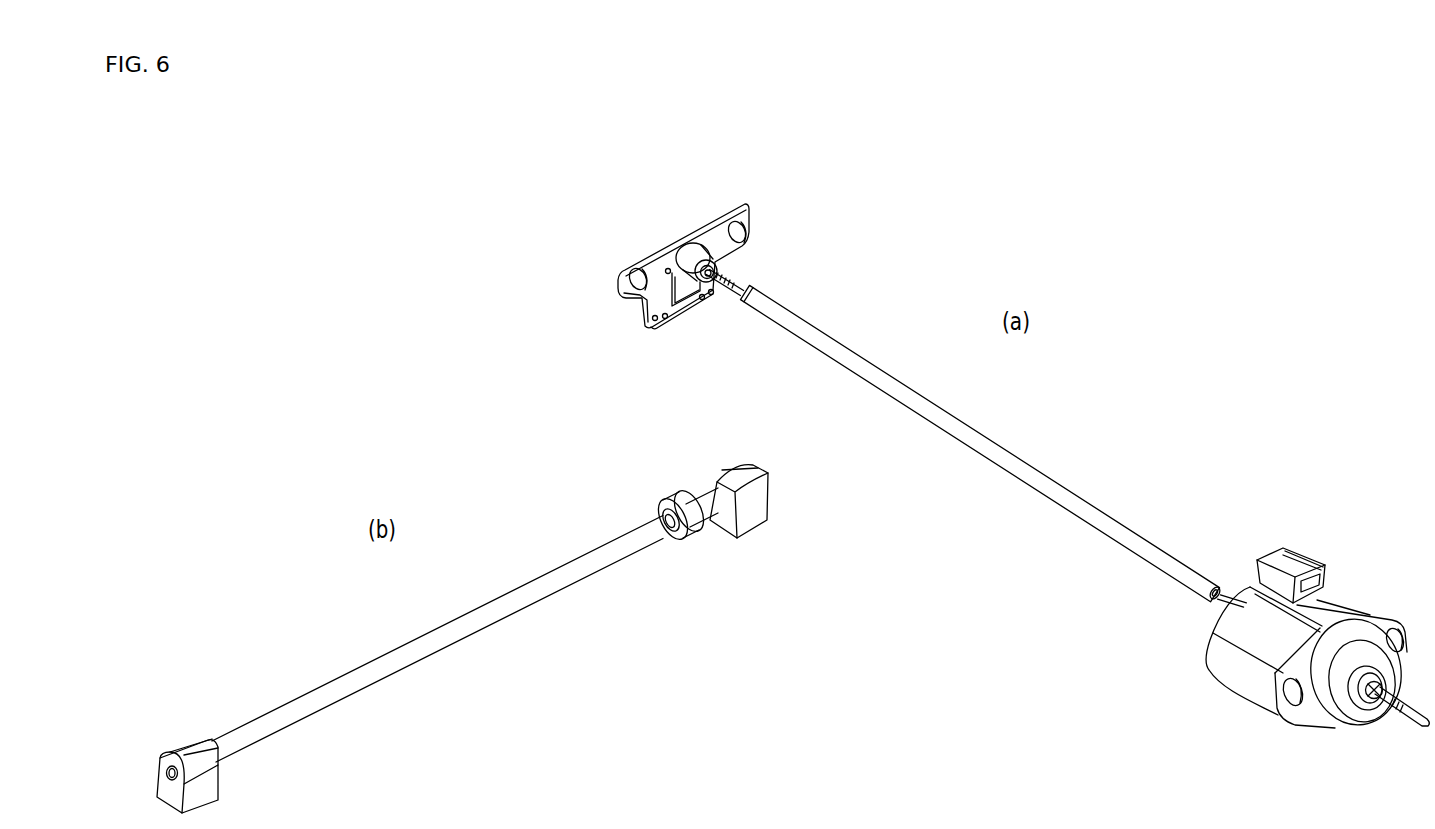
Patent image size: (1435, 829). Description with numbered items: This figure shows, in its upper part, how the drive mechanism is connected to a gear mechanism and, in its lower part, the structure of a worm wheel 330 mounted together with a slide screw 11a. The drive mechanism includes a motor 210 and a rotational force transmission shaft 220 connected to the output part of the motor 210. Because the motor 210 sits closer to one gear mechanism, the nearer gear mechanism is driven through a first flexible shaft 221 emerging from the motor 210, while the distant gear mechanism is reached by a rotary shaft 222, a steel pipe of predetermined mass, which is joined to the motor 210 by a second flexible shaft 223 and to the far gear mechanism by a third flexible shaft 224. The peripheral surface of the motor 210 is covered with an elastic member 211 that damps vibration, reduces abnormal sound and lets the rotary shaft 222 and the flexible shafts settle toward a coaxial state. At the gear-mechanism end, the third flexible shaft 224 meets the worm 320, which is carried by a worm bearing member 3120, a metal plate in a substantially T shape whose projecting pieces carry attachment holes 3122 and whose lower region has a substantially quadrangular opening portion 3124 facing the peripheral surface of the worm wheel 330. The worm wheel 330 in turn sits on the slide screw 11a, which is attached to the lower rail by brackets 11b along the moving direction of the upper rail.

The worm bearing member 3120 is at (700, 222).
The attachment hole 3122 is at (637, 280).
The opening portion 3124 is at (674, 308).
The worm 320 is at (692, 253).
The third flexible shaft 224 is at (736, 282).
The rotary shaft 222 is at (905, 393).
The rotational force transmission shaft 220 is at (980, 443).
The second flexible shaft 223 is at (1215, 586).
The motor 210 is at (1300, 639).
The elastic member 211 is at (1217, 656).
The first flexible shaft 221 is at (1405, 707).
The slide screw 11a is at (477, 626).
The bracket 11b is at (762, 511).
The worm wheel 330 is at (676, 498).